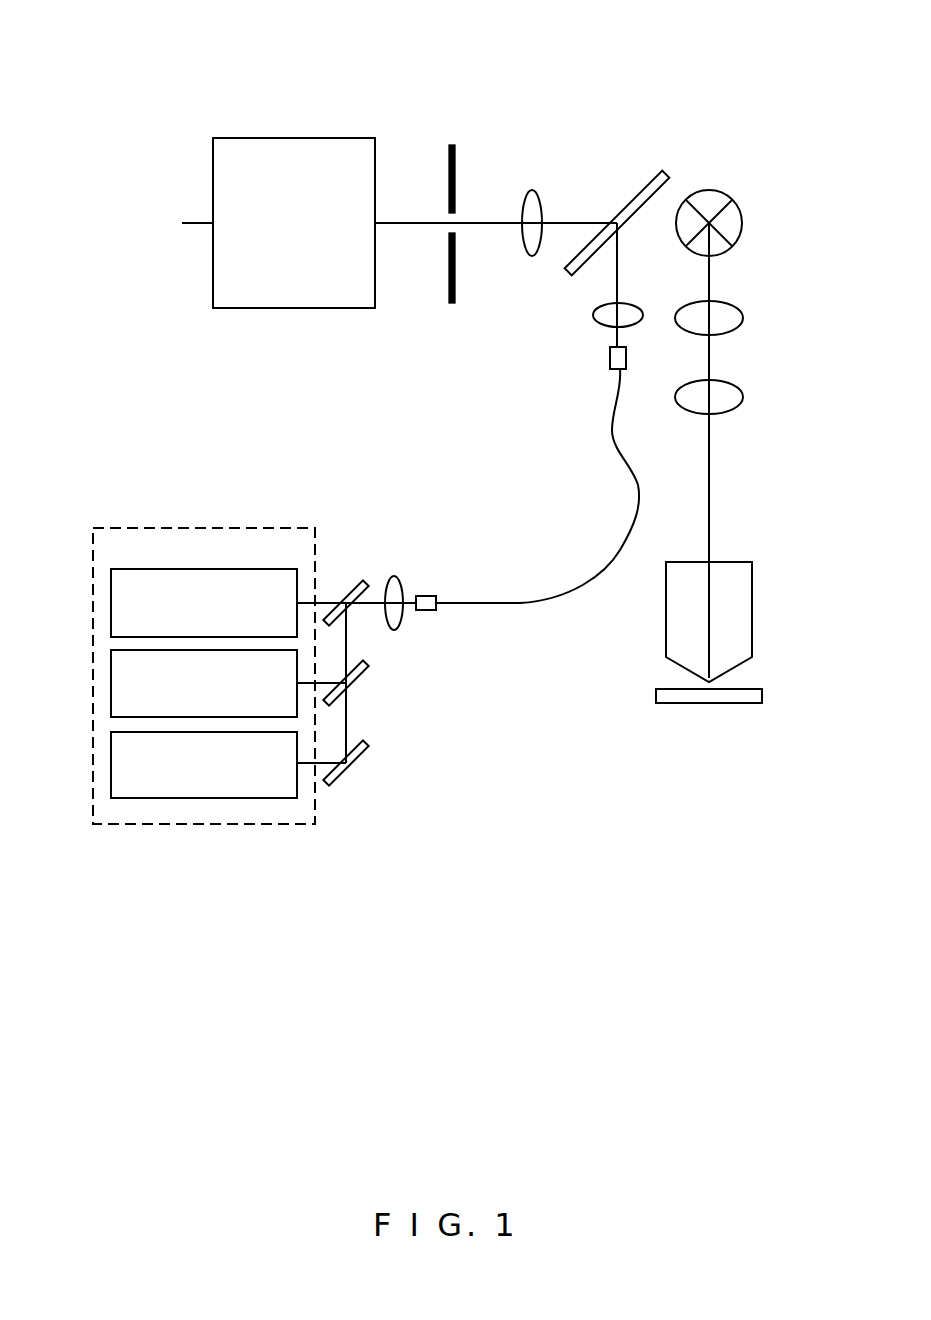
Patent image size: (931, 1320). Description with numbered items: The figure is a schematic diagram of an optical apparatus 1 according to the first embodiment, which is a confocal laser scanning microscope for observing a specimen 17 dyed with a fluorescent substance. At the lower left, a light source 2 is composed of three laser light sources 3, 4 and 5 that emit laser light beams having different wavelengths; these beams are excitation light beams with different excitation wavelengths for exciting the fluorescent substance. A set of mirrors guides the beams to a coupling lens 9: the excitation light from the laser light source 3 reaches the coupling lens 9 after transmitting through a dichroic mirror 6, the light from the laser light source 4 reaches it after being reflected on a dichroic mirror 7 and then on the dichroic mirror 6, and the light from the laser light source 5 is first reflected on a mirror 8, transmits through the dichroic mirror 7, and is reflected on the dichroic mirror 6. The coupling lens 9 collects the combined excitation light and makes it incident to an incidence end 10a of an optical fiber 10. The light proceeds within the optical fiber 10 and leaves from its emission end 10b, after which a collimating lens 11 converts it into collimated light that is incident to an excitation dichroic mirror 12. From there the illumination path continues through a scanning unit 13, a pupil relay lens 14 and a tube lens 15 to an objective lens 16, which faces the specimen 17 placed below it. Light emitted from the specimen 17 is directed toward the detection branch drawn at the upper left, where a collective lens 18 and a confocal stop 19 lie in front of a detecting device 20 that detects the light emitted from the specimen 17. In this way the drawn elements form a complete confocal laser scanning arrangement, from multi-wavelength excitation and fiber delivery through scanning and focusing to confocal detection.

The optical apparatus 1 is at (863, 49).
The light source 2 is at (209, 527).
The laser light source 3 is at (111, 603).
The laser light source 4 is at (111, 683).
The laser light source 5 is at (111, 763).
The dichroic mirror 6 is at (357, 585).
The dichroic mirror 7 is at (360, 669).
The mirror 8 is at (360, 749).
The coupling lens 9 is at (393, 580).
The optical fiber 10 is at (555, 598).
The incidence end 10a is at (425, 596).
The emission end 10b is at (610, 359).
The collimating lens 11 is at (603, 318).
The excitation dichroic mirror 12 is at (636, 197).
The scanning unit 13 is at (711, 204).
The pupil relay lens 14 is at (733, 320).
The tube lens 15 is at (733, 398).
The objective lens 16 is at (742, 591).
The specimen 17 is at (752, 696).
The collective lens 18 is at (533, 200).
The confocal stop 19 is at (448, 168).
The detecting device 20 is at (295, 138).